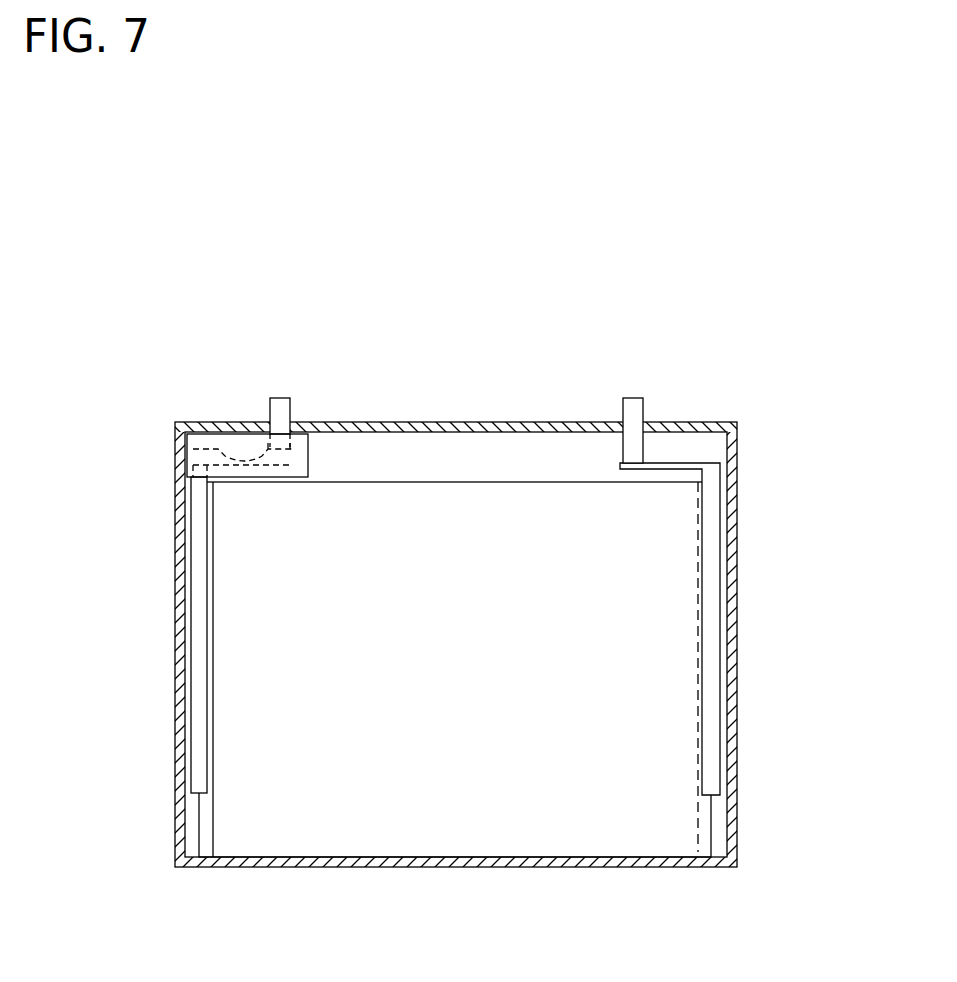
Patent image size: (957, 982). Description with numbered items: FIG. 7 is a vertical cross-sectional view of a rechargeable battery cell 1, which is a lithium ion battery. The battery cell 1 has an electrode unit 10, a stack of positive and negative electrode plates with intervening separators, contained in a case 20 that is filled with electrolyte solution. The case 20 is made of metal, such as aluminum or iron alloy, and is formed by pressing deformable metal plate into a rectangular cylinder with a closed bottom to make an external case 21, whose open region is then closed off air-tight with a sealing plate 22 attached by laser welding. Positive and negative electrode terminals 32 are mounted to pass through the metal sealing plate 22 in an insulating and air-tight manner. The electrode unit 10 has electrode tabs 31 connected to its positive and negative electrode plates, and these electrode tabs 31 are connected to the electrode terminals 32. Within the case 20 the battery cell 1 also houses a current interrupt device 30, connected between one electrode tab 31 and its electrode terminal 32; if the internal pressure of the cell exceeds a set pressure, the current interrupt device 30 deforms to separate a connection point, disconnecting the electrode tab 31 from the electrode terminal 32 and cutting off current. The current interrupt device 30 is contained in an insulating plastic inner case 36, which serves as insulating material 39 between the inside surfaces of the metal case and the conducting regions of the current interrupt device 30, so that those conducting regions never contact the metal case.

The battery cell 1 is at (500, 353).
The electrode unit 10 is at (566, 440).
The case 20 is at (843, 298).
The external case 21 is at (740, 528).
The sealing plate 22 is at (515, 425).
The current interrupt device 30 is at (336, 464).
The electrode tab 31 is at (200, 662).
The electrode terminal 32 is at (703, 397).
The inner case 36 is at (238, 442).
The insulating material 39 is at (209, 356).